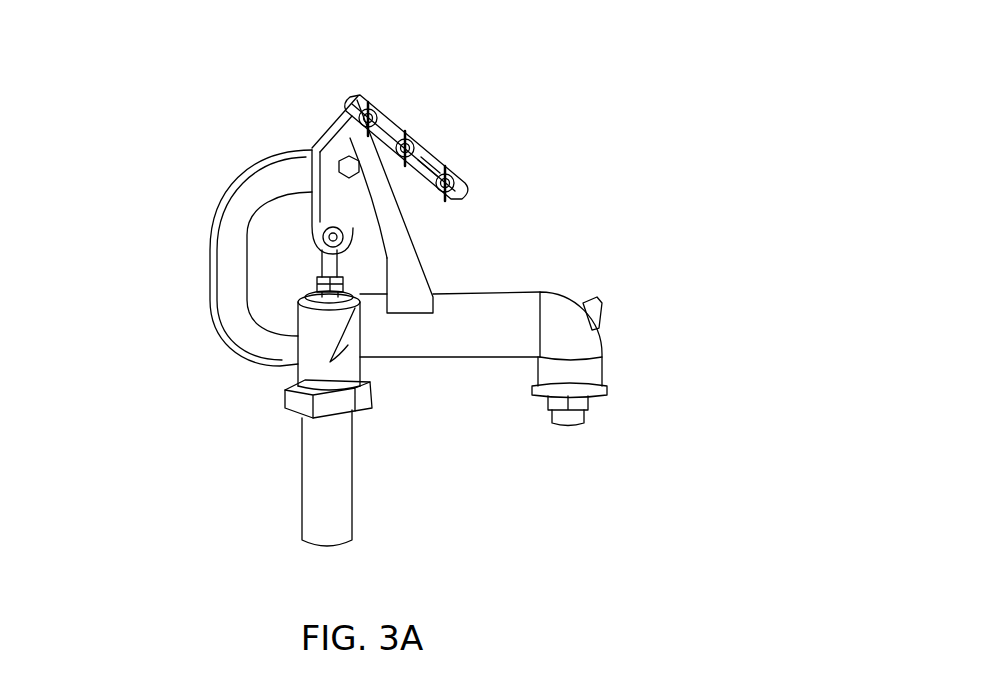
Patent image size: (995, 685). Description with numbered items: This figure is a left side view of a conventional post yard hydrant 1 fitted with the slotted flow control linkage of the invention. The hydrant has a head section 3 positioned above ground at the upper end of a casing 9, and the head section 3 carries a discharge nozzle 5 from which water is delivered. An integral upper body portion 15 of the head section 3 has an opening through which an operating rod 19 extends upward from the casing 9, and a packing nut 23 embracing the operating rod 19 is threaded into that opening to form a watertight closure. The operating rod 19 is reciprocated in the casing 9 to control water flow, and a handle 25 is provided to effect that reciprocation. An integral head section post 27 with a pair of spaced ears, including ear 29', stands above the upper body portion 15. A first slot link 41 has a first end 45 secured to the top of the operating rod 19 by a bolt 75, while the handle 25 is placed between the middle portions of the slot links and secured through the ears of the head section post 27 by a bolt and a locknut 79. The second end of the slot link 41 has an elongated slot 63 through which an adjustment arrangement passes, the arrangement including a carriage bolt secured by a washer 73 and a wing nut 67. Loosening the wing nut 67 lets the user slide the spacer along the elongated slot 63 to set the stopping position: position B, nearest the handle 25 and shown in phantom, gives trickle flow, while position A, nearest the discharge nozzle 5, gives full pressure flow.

The post yard hydrant 1 is at (600, 186).
The head section 3 is at (450, 338).
The discharge nozzle 5 is at (605, 390).
The casing 9 is at (325, 452).
The upper body portion 15 is at (211, 356).
The operating rod 19 is at (328, 265).
The packing nut 23 is at (300, 297).
The handle 25 is at (233, 275).
The head section post 27 is at (329, 184).
The ear 29' is at (259, 140).
The first slot link 41 is at (428, 100).
The first end 45 is at (345, 262).
The elongated slot 63 is at (450, 177).
The wing nut 67 is at (400, 132).
The washer 73 is at (417, 143).
The bolt 75 is at (345, 238).
The locknut 79 is at (313, 147).
The full pressure flow position A is at (467, 180).
The trickle flow position B is at (360, 97).